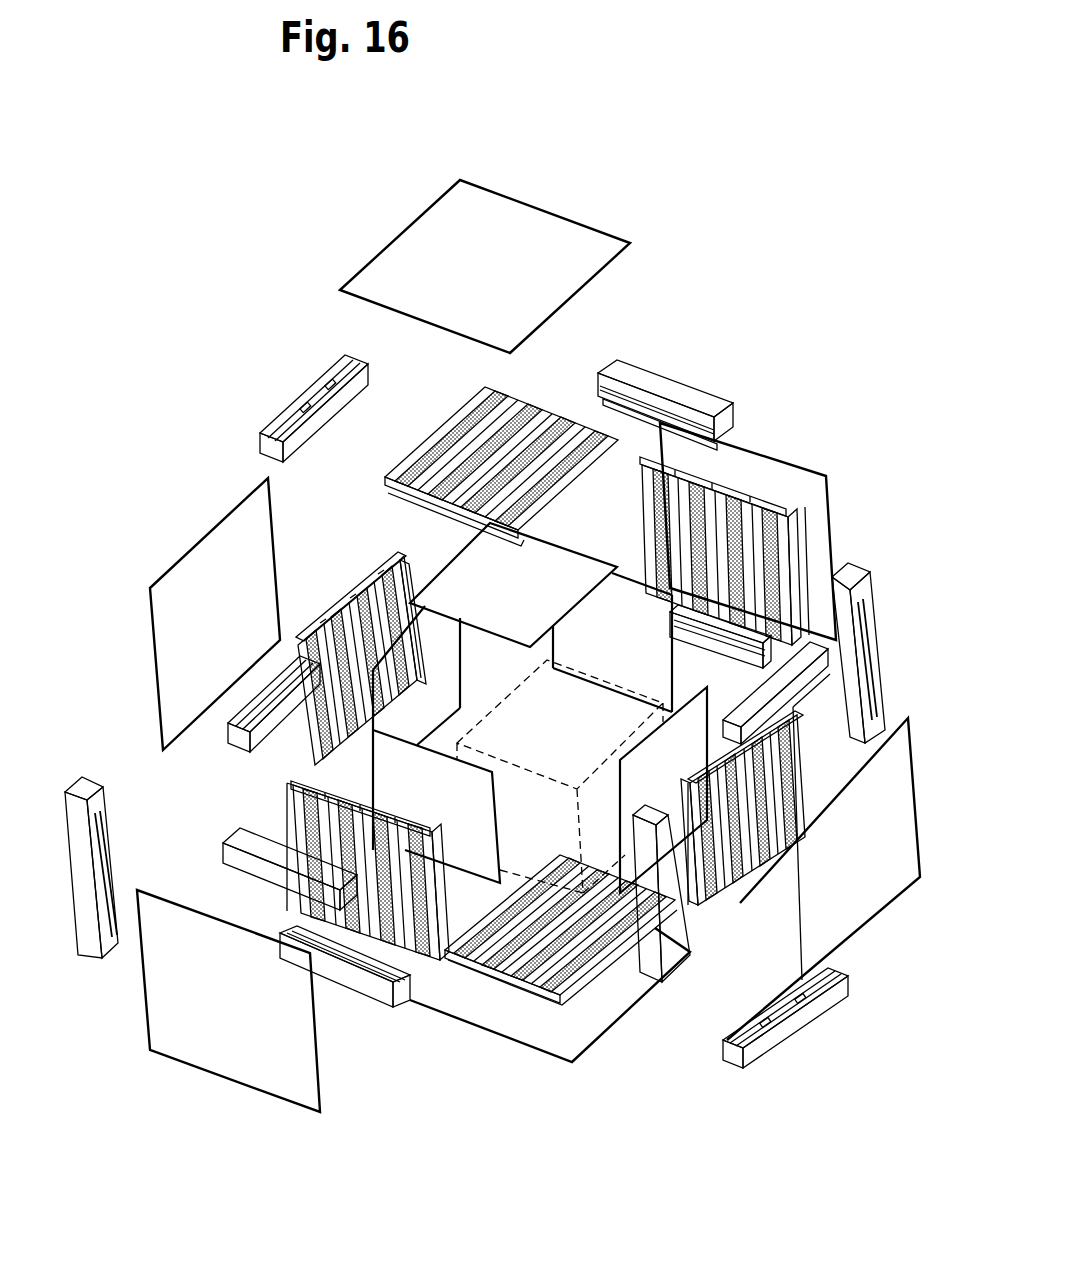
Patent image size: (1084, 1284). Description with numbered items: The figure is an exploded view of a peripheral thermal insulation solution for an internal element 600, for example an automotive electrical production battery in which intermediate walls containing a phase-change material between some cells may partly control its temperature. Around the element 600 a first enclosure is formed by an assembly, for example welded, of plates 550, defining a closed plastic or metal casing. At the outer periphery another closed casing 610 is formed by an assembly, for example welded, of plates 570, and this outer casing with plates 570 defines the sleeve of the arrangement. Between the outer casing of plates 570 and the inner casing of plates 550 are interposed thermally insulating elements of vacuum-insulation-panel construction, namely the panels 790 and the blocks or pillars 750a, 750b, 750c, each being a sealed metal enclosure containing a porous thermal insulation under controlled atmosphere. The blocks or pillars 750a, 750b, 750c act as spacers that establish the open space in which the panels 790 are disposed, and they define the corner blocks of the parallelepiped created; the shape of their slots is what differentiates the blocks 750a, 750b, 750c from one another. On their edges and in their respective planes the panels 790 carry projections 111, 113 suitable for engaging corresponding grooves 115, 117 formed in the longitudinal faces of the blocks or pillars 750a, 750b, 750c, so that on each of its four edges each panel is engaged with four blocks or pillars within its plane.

The plates 570 is at (430, 245).
The plates 550 is at (618, 637).
The internal element 600 is at (517, 690).
The outer casing 610 is at (828, 404).
The thermally insulating element of VIP construction 790 is at (470, 400).
The projection 111 is at (598, 512).
The projection 113 is at (640, 387).
The groove 115 is at (641, 390).
The groove 117 is at (337, 413).
The block or pillar 750a is at (292, 413).
The block or pillar 750b is at (650, 377).
The block or pillar 750c is at (860, 610).